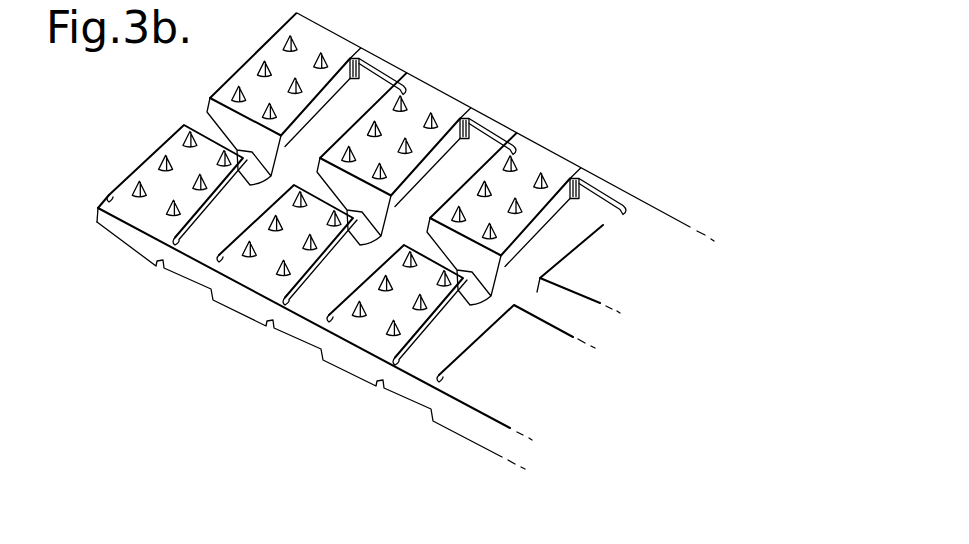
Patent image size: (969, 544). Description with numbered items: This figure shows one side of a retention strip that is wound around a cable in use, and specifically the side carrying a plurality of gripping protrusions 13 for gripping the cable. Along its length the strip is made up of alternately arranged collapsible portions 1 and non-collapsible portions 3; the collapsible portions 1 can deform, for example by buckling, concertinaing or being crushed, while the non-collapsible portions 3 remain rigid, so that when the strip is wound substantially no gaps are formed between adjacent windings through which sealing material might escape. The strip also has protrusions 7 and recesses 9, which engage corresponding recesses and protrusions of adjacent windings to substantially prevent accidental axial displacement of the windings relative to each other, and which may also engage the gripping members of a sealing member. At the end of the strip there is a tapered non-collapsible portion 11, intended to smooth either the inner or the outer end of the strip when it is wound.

The collapsible portion 1 is at (597, 197).
The non-collapsible portion 3 is at (538, 165).
The protrusion 7 is at (260, 273).
The recess 9 is at (490, 290).
The tapered non-collapsible portion 11 is at (132, 240).
The gripping protrusion 13 is at (427, 127).